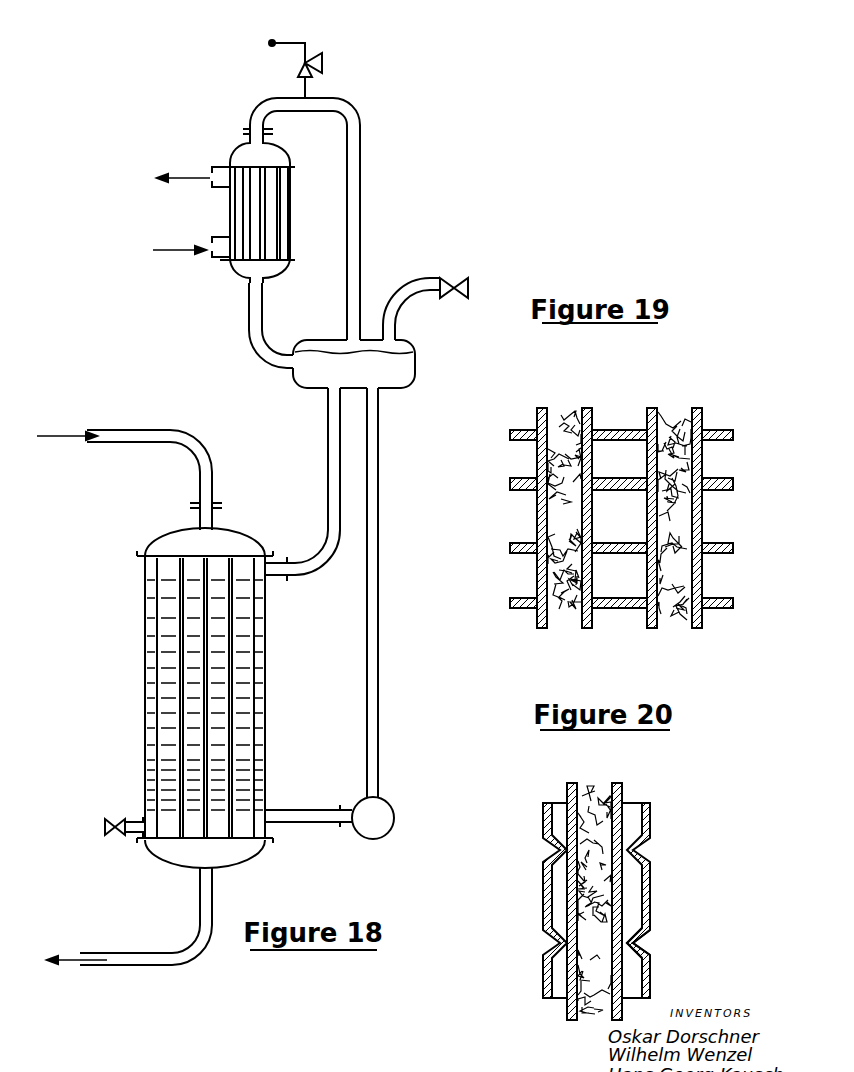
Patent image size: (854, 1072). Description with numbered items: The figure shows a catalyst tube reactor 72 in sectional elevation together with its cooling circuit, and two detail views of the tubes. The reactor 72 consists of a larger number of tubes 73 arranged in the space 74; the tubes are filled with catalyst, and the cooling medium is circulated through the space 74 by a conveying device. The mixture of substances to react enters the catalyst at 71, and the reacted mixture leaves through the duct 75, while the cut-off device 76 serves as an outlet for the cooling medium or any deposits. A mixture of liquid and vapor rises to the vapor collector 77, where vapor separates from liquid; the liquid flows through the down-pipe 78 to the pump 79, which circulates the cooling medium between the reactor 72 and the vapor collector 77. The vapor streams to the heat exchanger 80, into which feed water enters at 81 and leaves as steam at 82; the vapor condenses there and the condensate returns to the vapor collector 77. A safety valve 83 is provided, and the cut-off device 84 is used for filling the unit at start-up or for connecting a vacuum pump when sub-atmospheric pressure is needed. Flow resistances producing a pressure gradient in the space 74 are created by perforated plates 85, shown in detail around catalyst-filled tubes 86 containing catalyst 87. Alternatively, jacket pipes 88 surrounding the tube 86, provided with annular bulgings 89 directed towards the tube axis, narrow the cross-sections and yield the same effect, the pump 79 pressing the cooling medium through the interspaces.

In FIG. 18, the inlet 71 is at (197, 522).
In FIG. 18, the catalyst tube reactor 72 is at (143, 657).
In FIG. 18, the tubes 73 is at (253, 638).
In FIG. 18, the space 74 is at (242, 692).
In FIG. 18, the duct 75 is at (130, 952).
In FIG. 18, the cut-off device 76 is at (120, 820).
In FIG. 18, the vapor collector 77 is at (415, 372).
In FIG. 18, the down-pipe 78 is at (373, 522).
In FIG. 18, the pump 79 is at (377, 805).
In FIG. 18, the heat exchanger 80 is at (276, 205).
In FIG. 18, the feed water inlet 81 is at (208, 253).
In FIG. 18, the steam outlet 82 is at (208, 173).
In FIG. 18, the safety valve 83 is at (317, 65).
In FIG. 18, the cut-off device 84 is at (450, 278).
In FIG. 18, the perforated plates 85 is at (242, 745).
In FIG. 19, the perforated plates 85 is at (637, 542).
In FIG. 19, the tubes 86 is at (653, 413).
In FIG. 20, the tubes 86 is at (568, 928).
In FIG. 19, the catalyst 87 is at (683, 413).
In FIG. 20, the catalyst 87 is at (585, 977).
In FIG. 20, the jacket pipes 88 is at (652, 880).
In FIG. 20, the annular bulgings 89 is at (650, 943).